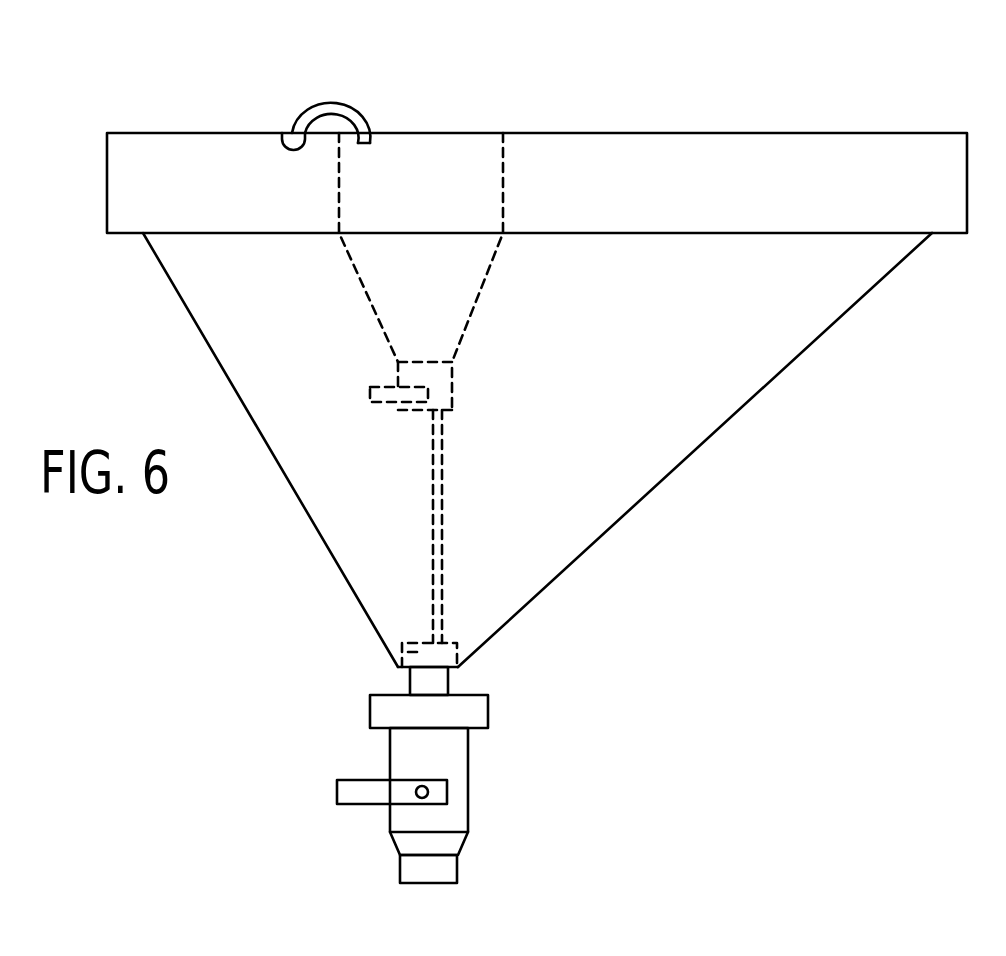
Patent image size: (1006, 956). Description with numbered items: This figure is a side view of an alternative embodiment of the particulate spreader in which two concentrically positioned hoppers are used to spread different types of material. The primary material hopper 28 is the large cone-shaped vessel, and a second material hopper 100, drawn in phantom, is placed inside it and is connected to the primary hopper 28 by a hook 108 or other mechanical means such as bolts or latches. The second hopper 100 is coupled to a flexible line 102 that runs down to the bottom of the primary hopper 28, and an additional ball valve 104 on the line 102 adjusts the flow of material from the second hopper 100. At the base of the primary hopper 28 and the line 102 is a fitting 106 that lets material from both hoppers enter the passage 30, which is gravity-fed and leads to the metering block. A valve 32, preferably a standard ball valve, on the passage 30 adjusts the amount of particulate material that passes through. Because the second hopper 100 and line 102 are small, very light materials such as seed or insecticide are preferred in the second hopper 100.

The material hopper 28 is at (677, 413).
The passage 30 is at (457, 762).
The valve 32 is at (352, 792).
The second material hopper 100 is at (467, 278).
The flexible line 102 is at (443, 582).
The ball valve 104 is at (365, 392).
The fitting 106 is at (392, 660).
The hook 108 is at (311, 116).